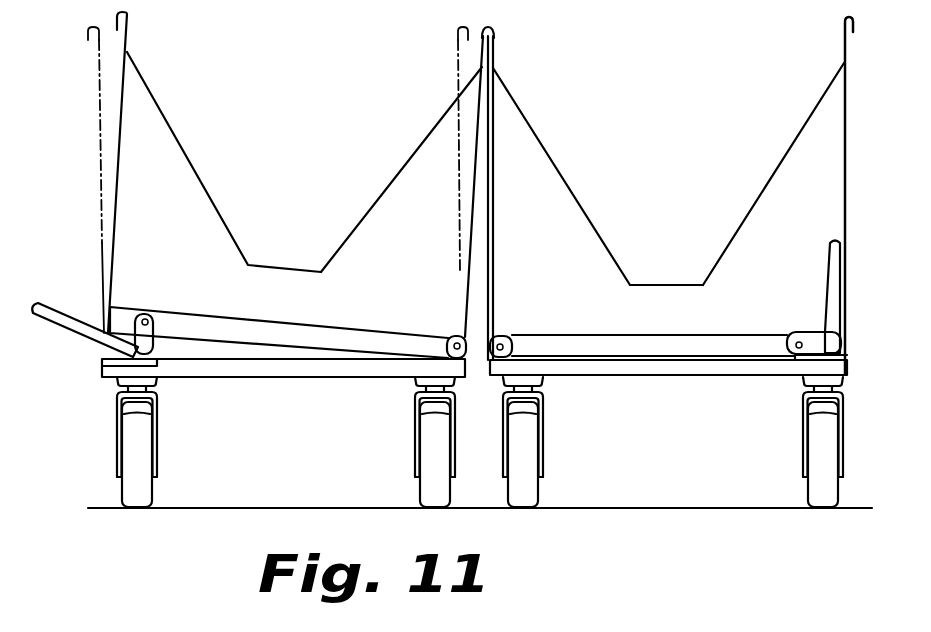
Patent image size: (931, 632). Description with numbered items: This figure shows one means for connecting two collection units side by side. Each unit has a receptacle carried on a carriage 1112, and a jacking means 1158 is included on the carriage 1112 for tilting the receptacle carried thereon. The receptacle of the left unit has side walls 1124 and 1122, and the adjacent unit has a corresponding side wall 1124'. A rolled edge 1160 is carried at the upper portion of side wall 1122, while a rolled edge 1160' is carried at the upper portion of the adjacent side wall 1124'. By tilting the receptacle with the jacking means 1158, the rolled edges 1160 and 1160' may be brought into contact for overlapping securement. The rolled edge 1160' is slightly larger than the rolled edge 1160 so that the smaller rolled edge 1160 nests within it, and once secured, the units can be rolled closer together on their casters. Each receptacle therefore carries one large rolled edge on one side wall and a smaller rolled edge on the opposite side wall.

The carriage 1112 is at (123, 370).
The side wall 1122 is at (395, 180).
The side wall 1124 is at (224, 162).
The side wall 1124' is at (598, 176).
The jacking means 1158 is at (95, 340).
The rolled edge 1160 is at (268, 256).
The rolled edge 1160' is at (667, 192).